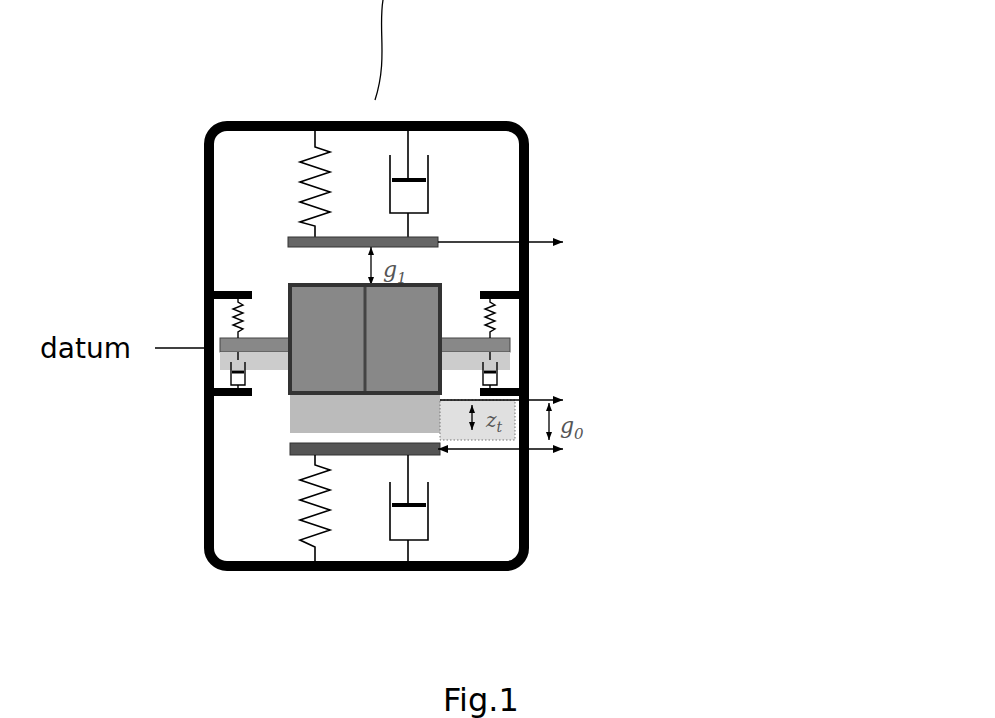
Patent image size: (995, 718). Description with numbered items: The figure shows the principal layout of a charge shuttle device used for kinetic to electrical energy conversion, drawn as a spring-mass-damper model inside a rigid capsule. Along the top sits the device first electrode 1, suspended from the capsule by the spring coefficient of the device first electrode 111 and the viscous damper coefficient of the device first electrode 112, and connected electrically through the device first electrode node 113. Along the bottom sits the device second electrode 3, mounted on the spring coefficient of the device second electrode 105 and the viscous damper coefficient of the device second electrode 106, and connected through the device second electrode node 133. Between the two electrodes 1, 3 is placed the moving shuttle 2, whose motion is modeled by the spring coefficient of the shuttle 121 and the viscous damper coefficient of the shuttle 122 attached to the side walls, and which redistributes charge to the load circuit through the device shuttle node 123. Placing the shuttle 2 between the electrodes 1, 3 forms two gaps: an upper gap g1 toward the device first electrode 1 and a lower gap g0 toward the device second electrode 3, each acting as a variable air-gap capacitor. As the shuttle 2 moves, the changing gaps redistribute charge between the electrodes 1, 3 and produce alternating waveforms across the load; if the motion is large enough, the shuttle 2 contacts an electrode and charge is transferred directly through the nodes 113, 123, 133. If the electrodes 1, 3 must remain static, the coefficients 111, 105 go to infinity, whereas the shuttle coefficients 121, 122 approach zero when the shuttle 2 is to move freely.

The device first electrode 1 is at (438, 242).
The shuttle 2 is at (510, 346).
The device second electrode 3 is at (440, 452).
The spring coefficient of the device second electrode 105 is at (312, 540).
The viscous damper coefficient of the device second electrode 106 is at (428, 540).
The spring coefficient of the device first electrode 111 is at (313, 147).
The viscous damper coefficient of the device first electrode 112 is at (408, 138).
The device first electrode node 113 is at (565, 242).
The spring coefficient of the shuttle 121 is at (487, 305).
The viscous damper coefficient of the shuttle 122 is at (483, 365).
The device shuttle node 123 is at (563, 400).
The device second electrode node 133 is at (565, 449).